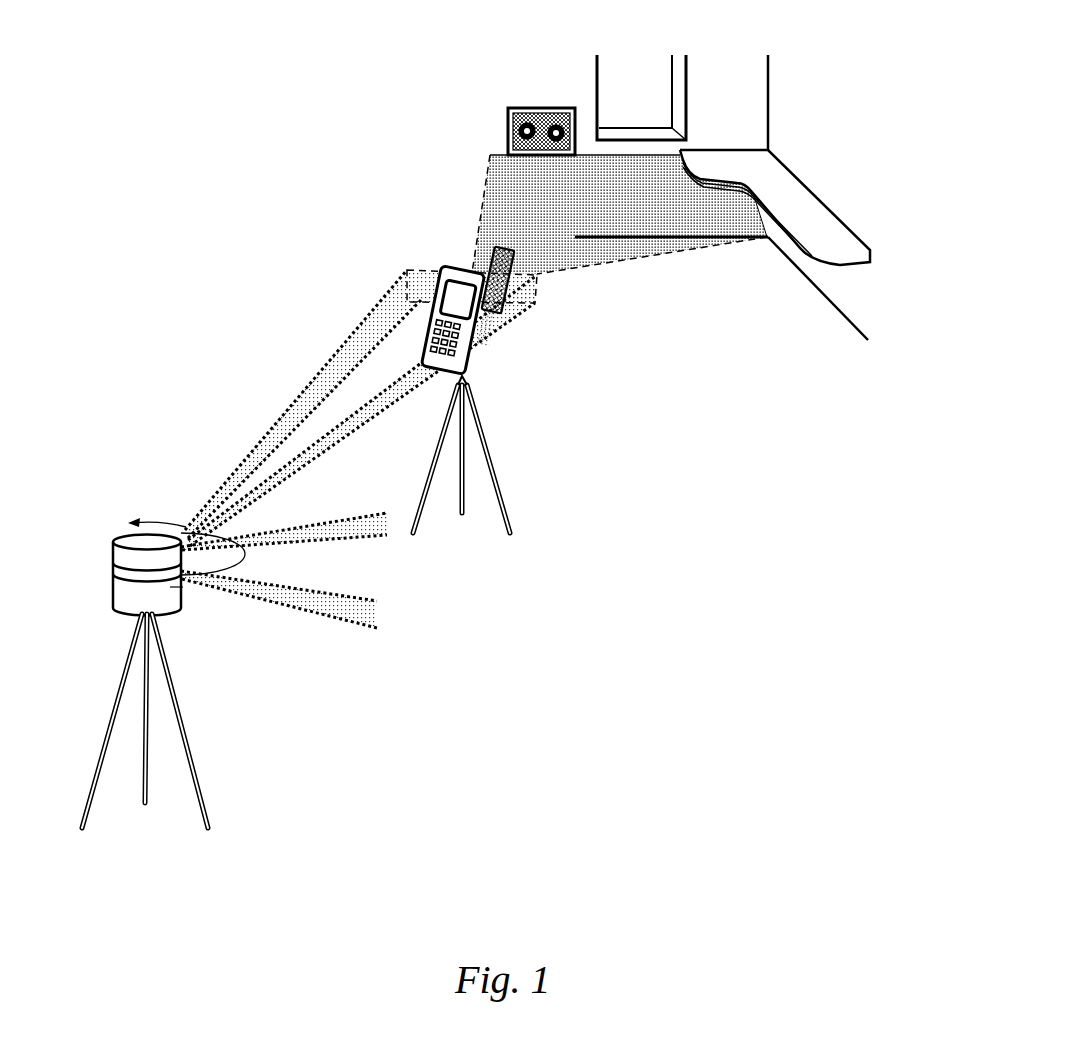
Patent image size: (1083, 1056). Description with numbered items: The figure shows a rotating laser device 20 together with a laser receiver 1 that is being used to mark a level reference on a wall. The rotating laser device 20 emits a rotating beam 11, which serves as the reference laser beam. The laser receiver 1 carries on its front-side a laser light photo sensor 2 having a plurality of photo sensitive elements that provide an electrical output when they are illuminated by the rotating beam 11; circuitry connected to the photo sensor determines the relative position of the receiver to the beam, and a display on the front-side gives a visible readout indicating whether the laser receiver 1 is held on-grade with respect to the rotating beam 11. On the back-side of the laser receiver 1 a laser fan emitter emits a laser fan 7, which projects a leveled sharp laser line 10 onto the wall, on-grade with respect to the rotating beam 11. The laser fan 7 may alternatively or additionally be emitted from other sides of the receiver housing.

The laser receiver 1 is at (477, 371).
The laser light photo sensor 2 is at (505, 258).
The laser fan 7 is at (497, 195).
The laser line 10 is at (634, 157).
The rotating beam 11 is at (350, 335).
The rotating laser device 20 is at (309, 549).